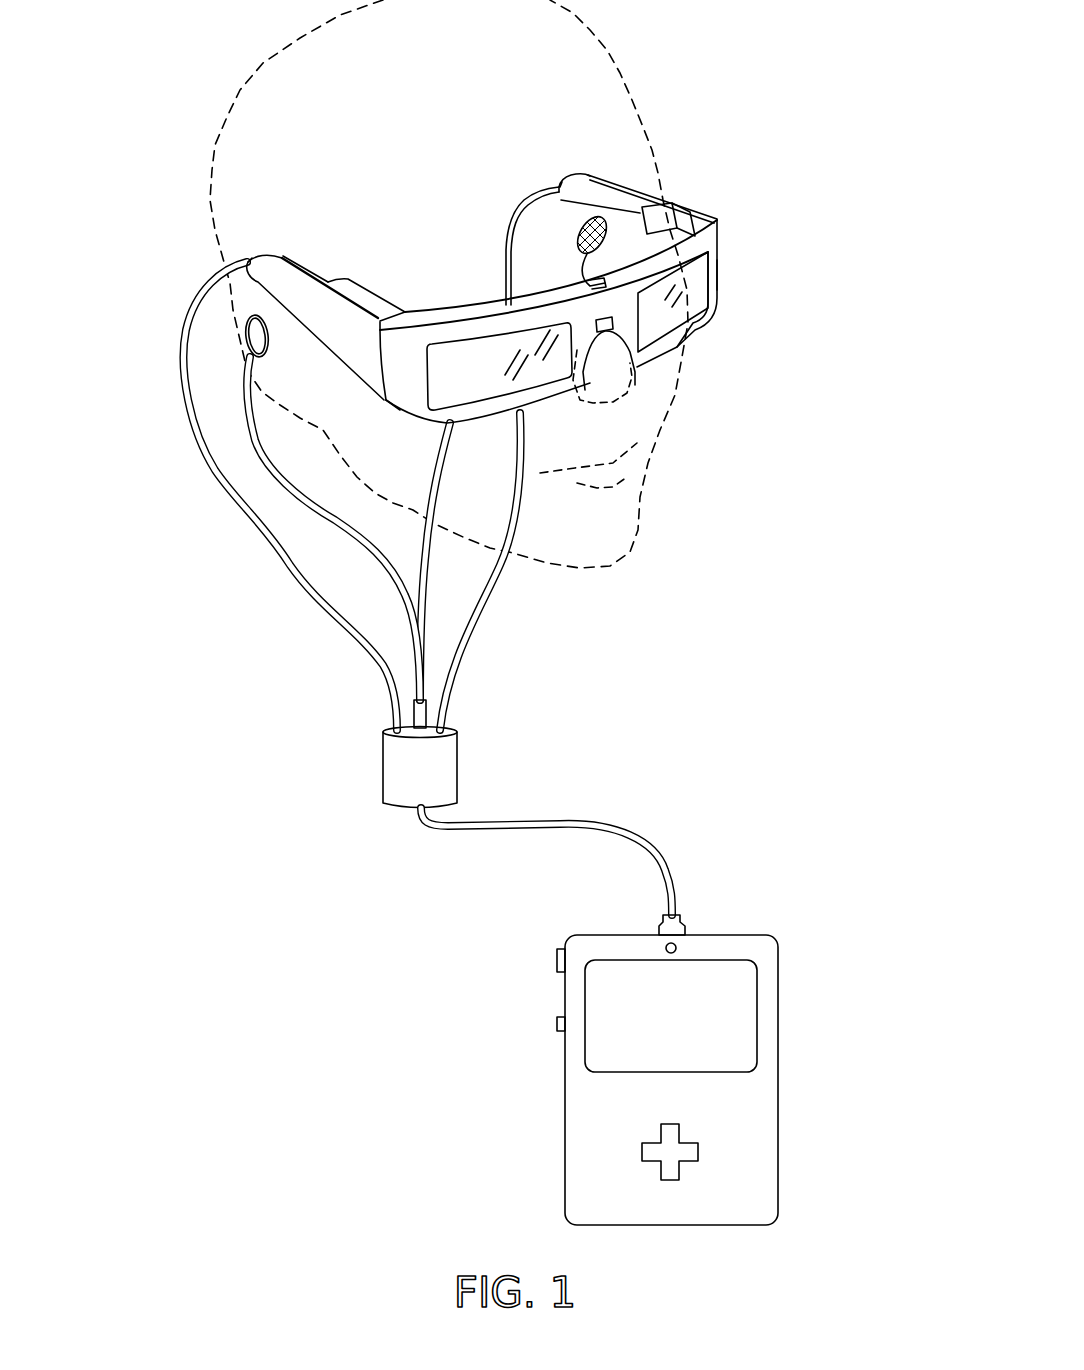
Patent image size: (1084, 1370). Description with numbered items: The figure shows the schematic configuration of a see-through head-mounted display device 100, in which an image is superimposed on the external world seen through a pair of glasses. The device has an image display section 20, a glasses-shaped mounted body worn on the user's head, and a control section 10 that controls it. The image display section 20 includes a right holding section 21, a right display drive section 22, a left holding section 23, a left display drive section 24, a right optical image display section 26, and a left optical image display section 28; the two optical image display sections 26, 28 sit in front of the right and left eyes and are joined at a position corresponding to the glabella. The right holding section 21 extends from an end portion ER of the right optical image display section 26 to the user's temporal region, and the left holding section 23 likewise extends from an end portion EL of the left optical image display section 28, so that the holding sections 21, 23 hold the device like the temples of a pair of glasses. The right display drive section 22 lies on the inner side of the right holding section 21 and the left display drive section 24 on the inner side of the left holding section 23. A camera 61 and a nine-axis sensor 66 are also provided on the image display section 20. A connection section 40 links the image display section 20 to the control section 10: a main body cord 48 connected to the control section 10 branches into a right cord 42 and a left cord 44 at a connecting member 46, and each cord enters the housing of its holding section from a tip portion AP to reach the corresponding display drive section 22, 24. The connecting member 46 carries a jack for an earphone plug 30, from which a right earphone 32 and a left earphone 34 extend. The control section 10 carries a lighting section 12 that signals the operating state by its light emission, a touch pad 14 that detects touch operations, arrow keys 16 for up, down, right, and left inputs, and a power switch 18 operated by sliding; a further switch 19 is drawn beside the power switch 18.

The head-mounted display device 100 is at (669, 72).
The control section 10 is at (662, 1038).
The lighting section 12 is at (679, 944).
The touch pad 14 is at (760, 1015).
The arrow keys 16 is at (700, 1151).
The power switch 18 is at (556, 958).
The luminance switch 19 is at (556, 1025).
The image display section 20 is at (500, 291).
The right holding section 21 is at (276, 238).
The right display drive section 22 is at (365, 291).
The left holding section 23 is at (637, 174).
The left display drive section 24 is at (665, 196).
The right optical image display section 26 is at (477, 398).
The left optical image display section 28 is at (701, 311).
The earphone plug 30 is at (426, 712).
The right earphone 32 is at (252, 338).
The left earphone 34 is at (580, 241).
The connection section 40 is at (448, 588).
The right cord 42 is at (278, 556).
The left cord 44 is at (492, 592).
The connecting member 46 is at (447, 764).
The main body cord 48 is at (660, 848).
The camera 61 is at (595, 325).
The nine-axis sensor 66 is at (568, 286).
The tip portion AP is at (247, 262).
The end portion ER is at (406, 400).
The end portion EL is at (720, 265).